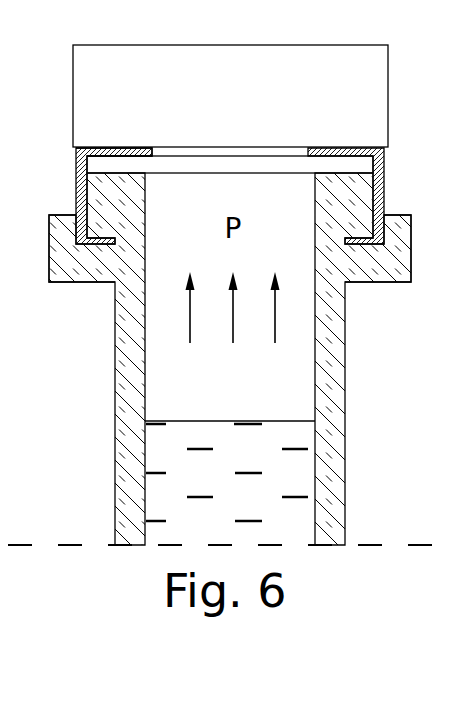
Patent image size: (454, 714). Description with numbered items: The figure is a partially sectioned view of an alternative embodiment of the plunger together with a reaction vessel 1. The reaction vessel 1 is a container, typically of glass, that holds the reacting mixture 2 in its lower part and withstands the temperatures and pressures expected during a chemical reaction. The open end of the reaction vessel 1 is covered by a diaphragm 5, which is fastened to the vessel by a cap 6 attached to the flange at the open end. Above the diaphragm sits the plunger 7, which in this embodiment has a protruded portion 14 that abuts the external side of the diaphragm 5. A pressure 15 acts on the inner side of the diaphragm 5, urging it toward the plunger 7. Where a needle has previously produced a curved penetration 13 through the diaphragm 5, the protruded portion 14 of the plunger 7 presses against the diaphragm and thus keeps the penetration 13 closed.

The reaction vessel 1 is at (345, 353).
The reacting mixture 2 is at (280, 520).
The diaphragm 5 is at (352, 166).
The cap 6 is at (384, 208).
The plunger 7 is at (388, 93).
The penetration 13 is at (240, 157).
The protruded portion 14 is at (152, 147).
The pressure 15 is at (190, 328).